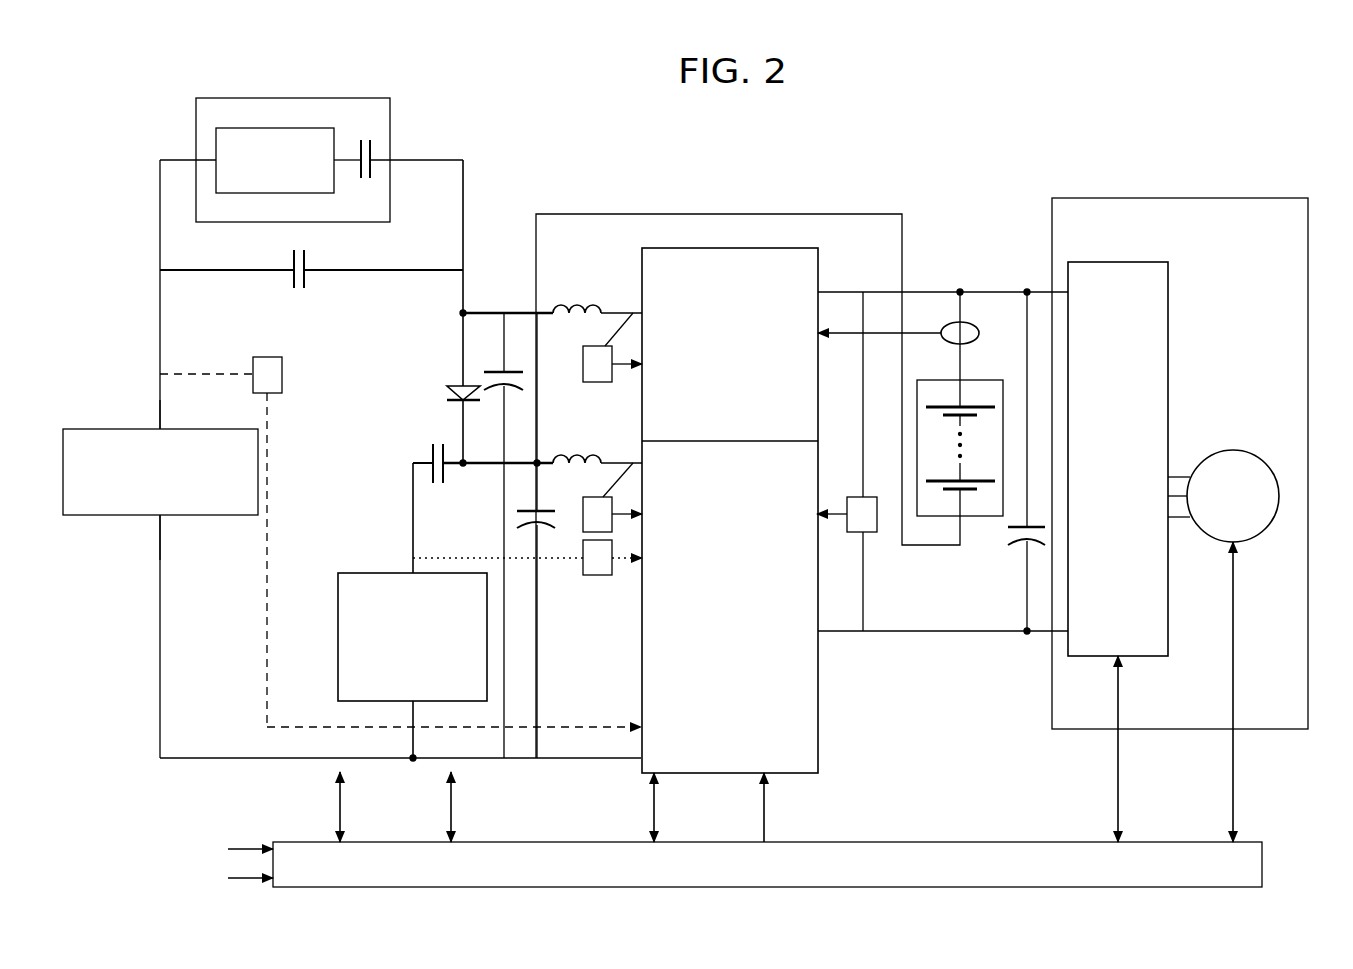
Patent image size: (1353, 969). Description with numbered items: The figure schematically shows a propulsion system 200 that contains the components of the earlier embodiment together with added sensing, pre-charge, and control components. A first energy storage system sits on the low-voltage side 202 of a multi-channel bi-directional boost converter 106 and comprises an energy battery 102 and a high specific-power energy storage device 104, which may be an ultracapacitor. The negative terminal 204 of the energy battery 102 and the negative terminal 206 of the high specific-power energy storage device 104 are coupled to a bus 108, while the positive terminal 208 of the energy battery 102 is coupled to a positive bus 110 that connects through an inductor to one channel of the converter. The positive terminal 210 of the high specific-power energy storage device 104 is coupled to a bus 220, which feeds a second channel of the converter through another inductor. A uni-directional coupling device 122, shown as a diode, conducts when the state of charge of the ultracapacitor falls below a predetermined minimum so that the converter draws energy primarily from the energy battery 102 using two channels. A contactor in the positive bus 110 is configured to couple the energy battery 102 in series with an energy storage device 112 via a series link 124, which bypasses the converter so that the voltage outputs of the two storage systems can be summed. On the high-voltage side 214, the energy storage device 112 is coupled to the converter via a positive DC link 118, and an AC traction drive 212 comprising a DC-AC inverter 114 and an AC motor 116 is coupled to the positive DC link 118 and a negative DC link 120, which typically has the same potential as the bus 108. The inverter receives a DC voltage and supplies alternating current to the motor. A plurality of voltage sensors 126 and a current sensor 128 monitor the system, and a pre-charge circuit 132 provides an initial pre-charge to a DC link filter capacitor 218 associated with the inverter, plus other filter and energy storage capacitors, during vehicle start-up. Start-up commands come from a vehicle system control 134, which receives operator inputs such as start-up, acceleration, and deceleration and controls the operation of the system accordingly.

The propulsion system 200 is at (978, 113).
The energy battery 102 is at (110, 515).
The high specific-power energy storage device 104 is at (338, 597).
The multi-channel bi-directional boost converter 106 is at (820, 732).
The bus 108 is at (160, 655).
The bus 110 is at (160, 303).
The energy storage device 112 is at (972, 520).
The DC-AC inverter 114 is at (1168, 283).
The AC motor 116 is at (1270, 466).
The positive DC link 118 is at (975, 291).
The negative DC link 120 is at (920, 633).
The uni-directional coupling device 122 is at (455, 386).
The series link 124 is at (806, 214).
The voltage sensors 126 is at (280, 357).
The current sensor 128 is at (979, 330).
The pre-charge circuit 132 is at (389, 98).
The vehicle system control 134 is at (1262, 855).
The low-voltage side 202 is at (520, 185).
The negative terminal 204 is at (165, 515).
The negative terminal 206 is at (410, 716).
The positive terminal 208 is at (157, 429).
The positive terminal 210 is at (396, 555).
The AC traction drive 212 is at (1230, 198).
The high-voltage side 214 is at (918, 187).
The DC link filter capacitor 218 is at (1011, 556).
The bus 220 is at (407, 500).